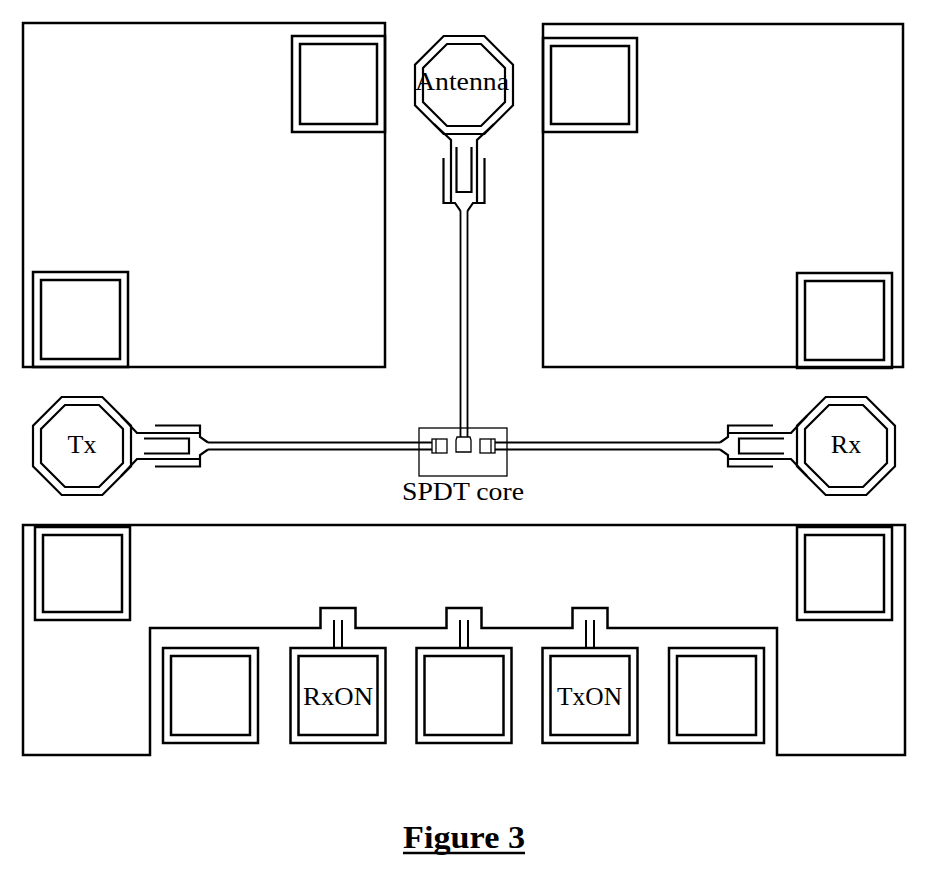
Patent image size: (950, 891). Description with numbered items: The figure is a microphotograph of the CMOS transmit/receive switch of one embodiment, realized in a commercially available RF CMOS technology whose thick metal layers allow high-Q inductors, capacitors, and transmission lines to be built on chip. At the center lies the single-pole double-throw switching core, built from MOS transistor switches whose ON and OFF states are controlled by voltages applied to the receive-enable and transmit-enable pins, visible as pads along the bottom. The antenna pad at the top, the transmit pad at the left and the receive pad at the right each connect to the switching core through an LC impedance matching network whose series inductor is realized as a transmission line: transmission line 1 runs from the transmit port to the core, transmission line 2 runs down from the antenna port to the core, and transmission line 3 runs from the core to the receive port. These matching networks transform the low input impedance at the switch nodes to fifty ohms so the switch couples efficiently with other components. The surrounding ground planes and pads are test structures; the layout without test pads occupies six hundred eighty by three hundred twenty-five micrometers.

The transmission line TML1 1 is at (320, 428).
The transmission line TML2 2 is at (500, 324).
The transmission line TML3 3 is at (607, 428).